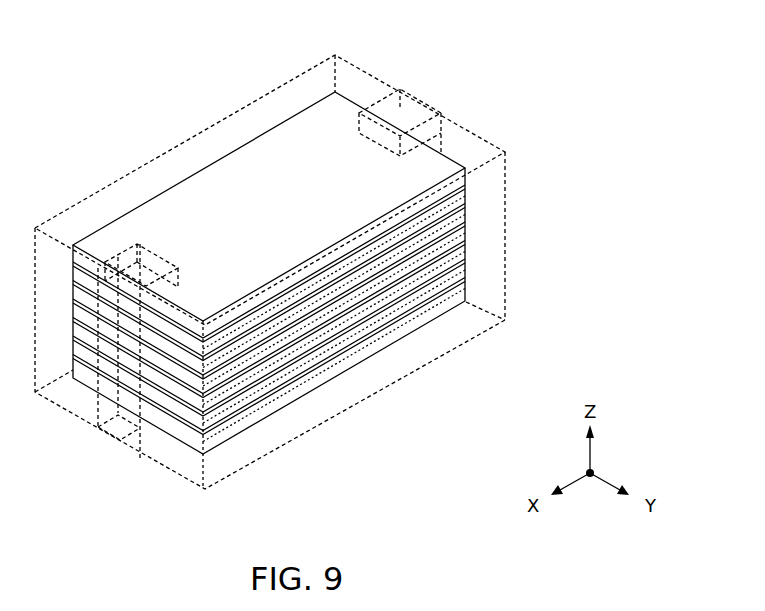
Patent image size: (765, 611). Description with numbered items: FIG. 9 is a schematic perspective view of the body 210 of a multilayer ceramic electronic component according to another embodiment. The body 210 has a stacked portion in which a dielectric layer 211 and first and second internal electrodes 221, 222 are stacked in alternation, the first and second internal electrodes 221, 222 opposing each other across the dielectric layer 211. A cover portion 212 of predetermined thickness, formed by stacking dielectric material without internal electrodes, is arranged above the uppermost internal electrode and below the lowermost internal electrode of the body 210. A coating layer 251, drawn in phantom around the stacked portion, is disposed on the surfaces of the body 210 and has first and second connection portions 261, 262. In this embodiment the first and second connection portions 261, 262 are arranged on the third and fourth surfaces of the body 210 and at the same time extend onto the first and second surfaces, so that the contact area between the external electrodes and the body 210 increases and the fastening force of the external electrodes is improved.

The body 210 is at (117, 34).
The coating layer 251 is at (160, 156).
The first connection portion 261 is at (92, 440).
The second connection portion 262 is at (447, 110).
The cover portion 212 is at (467, 181).
The first internal electrode 221 is at (467, 208).
The dielectric layer 211 is at (467, 235).
The second internal electrode 222 is at (467, 265).